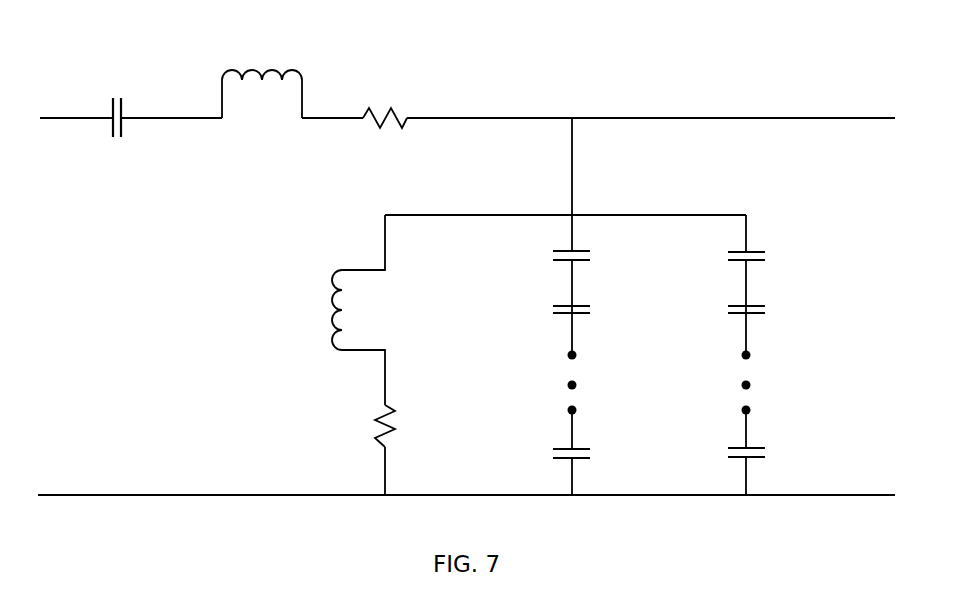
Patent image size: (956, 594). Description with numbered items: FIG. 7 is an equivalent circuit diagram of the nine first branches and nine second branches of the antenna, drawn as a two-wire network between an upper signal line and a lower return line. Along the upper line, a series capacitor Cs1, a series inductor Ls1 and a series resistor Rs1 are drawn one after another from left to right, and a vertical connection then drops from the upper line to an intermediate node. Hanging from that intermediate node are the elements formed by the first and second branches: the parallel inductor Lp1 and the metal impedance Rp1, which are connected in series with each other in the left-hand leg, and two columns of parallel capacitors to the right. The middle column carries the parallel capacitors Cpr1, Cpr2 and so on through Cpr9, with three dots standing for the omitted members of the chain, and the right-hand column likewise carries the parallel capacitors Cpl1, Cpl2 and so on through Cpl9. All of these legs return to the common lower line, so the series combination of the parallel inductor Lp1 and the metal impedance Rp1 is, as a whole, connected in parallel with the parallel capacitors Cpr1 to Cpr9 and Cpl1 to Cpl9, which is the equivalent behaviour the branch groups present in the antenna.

The series capacitor Cs1 is at (112, 95).
The series inductor Ls1 is at (262, 65).
The series resistor Rs1 is at (383, 86).
The parallel inductor Lp1 is at (312, 310).
The metal impedance Rp1 is at (351, 423).
The parallel capacitor Cpr1 is at (538, 255).
The parallel capacitor Cpr2 is at (538, 315).
The parallel capacitor Cpr9 is at (538, 452).
The parallel capacitor Cpl1 is at (775, 255).
The parallel capacitor Cpl2 is at (775, 315).
The parallel capacitor Cpl9 is at (777, 458).